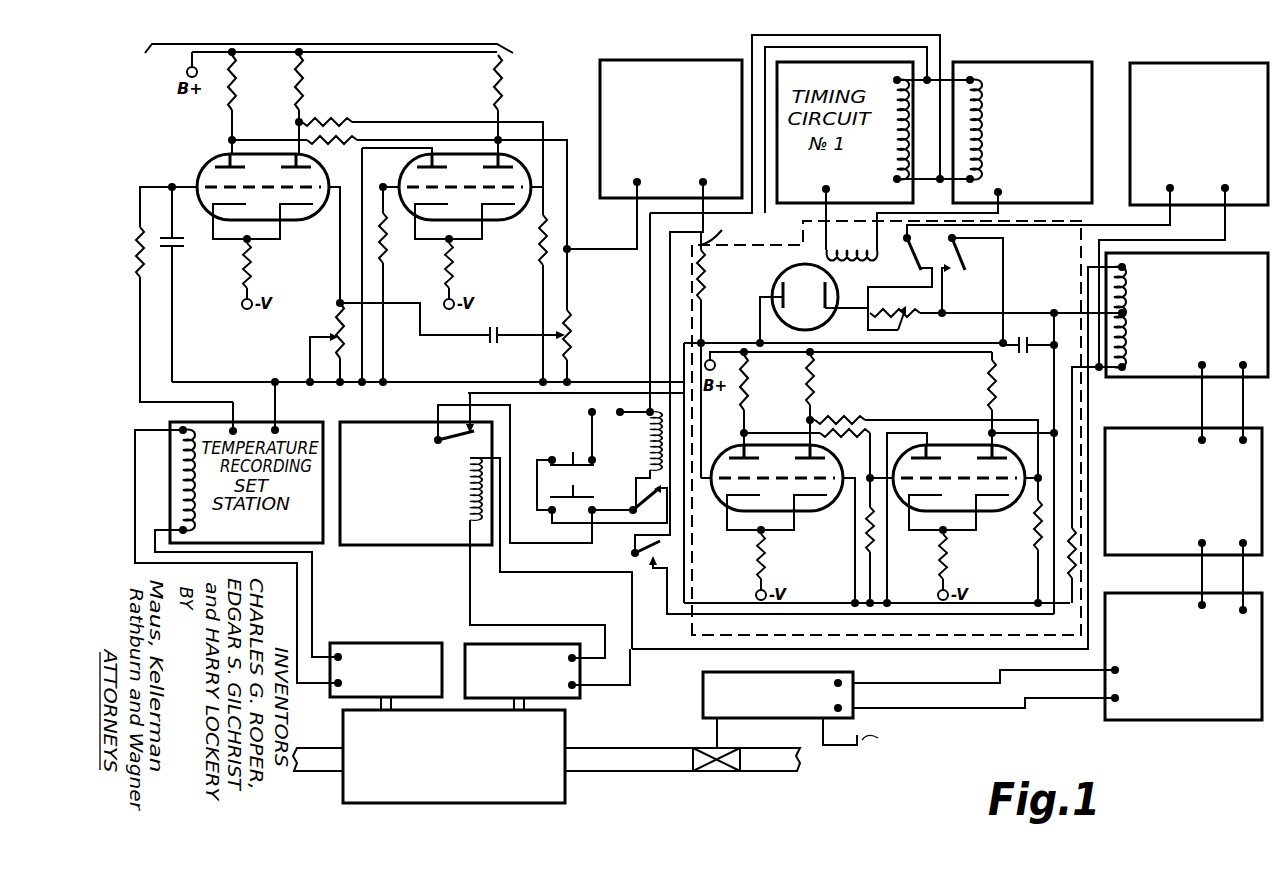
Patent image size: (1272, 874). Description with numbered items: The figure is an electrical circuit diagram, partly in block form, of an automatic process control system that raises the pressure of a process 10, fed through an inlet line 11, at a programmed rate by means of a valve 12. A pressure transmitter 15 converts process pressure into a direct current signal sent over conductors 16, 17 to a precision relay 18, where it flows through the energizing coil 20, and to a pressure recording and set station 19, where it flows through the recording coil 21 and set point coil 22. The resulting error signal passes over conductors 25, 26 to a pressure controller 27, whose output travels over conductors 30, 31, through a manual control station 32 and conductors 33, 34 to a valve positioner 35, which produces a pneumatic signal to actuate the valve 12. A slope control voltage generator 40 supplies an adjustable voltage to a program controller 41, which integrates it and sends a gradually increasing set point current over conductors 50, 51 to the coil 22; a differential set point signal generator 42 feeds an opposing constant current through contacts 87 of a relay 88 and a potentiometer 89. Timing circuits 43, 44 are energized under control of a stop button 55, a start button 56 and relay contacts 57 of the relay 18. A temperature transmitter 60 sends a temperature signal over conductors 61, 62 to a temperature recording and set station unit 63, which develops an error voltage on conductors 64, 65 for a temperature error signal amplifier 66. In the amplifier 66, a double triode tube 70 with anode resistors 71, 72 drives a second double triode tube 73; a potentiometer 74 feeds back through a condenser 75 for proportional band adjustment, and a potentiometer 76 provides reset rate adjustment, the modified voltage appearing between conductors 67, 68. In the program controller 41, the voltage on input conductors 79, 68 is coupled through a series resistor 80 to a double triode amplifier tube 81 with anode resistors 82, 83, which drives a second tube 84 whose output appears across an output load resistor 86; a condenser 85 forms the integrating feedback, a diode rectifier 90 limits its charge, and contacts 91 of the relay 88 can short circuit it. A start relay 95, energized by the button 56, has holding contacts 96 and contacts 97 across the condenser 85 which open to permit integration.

The process 10 is at (562, 740).
The inlet line 11 is at (324, 750).
The valve 12 is at (708, 774).
The pressure transmitter 15 is at (522, 634).
The conductor 16 is at (616, 678).
The conductor 17 is at (620, 632).
The precision relay 18 is at (402, 422).
The pressure recording and set station 19 is at (1226, 258).
The energizing coil 20 is at (464, 500).
The recording coil 21 is at (1128, 280).
The set point coil 22 is at (1128, 350).
The conductor 25 is at (1200, 392).
The conductor 26 is at (1244, 392).
The pressure controller 27 is at (1176, 424).
The conductor 30 is at (1196, 574).
The conductor 31 is at (1240, 574).
The manual control station 32 is at (1200, 724).
The conductor 33 is at (1066, 674).
The conductor 34 is at (1074, 702).
The valve positioner 35 is at (702, 686).
The slope control voltage generator 40 is at (688, 56).
The program controller 41 is at (886, 428).
The differential set point signal generator 42 is at (1216, 64).
The timing circuit 43 is at (802, 208).
The timing circuit 44 is at (1060, 56).
The conductor 50 is at (1080, 312).
The conductor 51 is at (1092, 386).
The stop button 55 is at (562, 458).
The start button 56 is at (568, 498).
The relay contacts 57 is at (476, 426).
The temperature transmitter 60 is at (398, 640).
The conductor 61 is at (330, 644).
The conductor 62 is at (318, 684).
The temperature recording and set station unit 63 is at (260, 426).
The output conductor 64 is at (202, 402).
The output conductor 65 is at (262, 384).
The temperature error signal amplifier 66 is at (322, 36).
The conductor 67 is at (616, 250).
The common conductor 68 is at (668, 390).
The double triode tube 70 is at (216, 165).
The anode resistor 71 is at (232, 104).
The anode resistor 72 is at (300, 96).
The double triode tube 73 is at (486, 232).
The potentiometer 74 is at (572, 344).
The condenser 75 is at (484, 343).
The potentiometer 76 is at (334, 328).
The input conductor 79 is at (722, 248).
The series resistor 80 is at (704, 290).
The double triode amplifier tube 81 is at (720, 504).
The anode resistor 82 is at (746, 398).
The anode resistor 83 is at (813, 392).
The differential amplifier tube 84 is at (1014, 510).
The condenser 85 is at (1028, 356).
The output load resistor 86 is at (1068, 552).
The contacts 87 is at (912, 262).
The relay 88 is at (866, 245).
The potentiometer 89 is at (912, 308).
The diode rectifier 90 is at (770, 288).
The contacts 91 is at (958, 270).
The start relay 95 is at (646, 444).
The holding contacts 96 is at (648, 498).
The contacts 97 is at (632, 556).